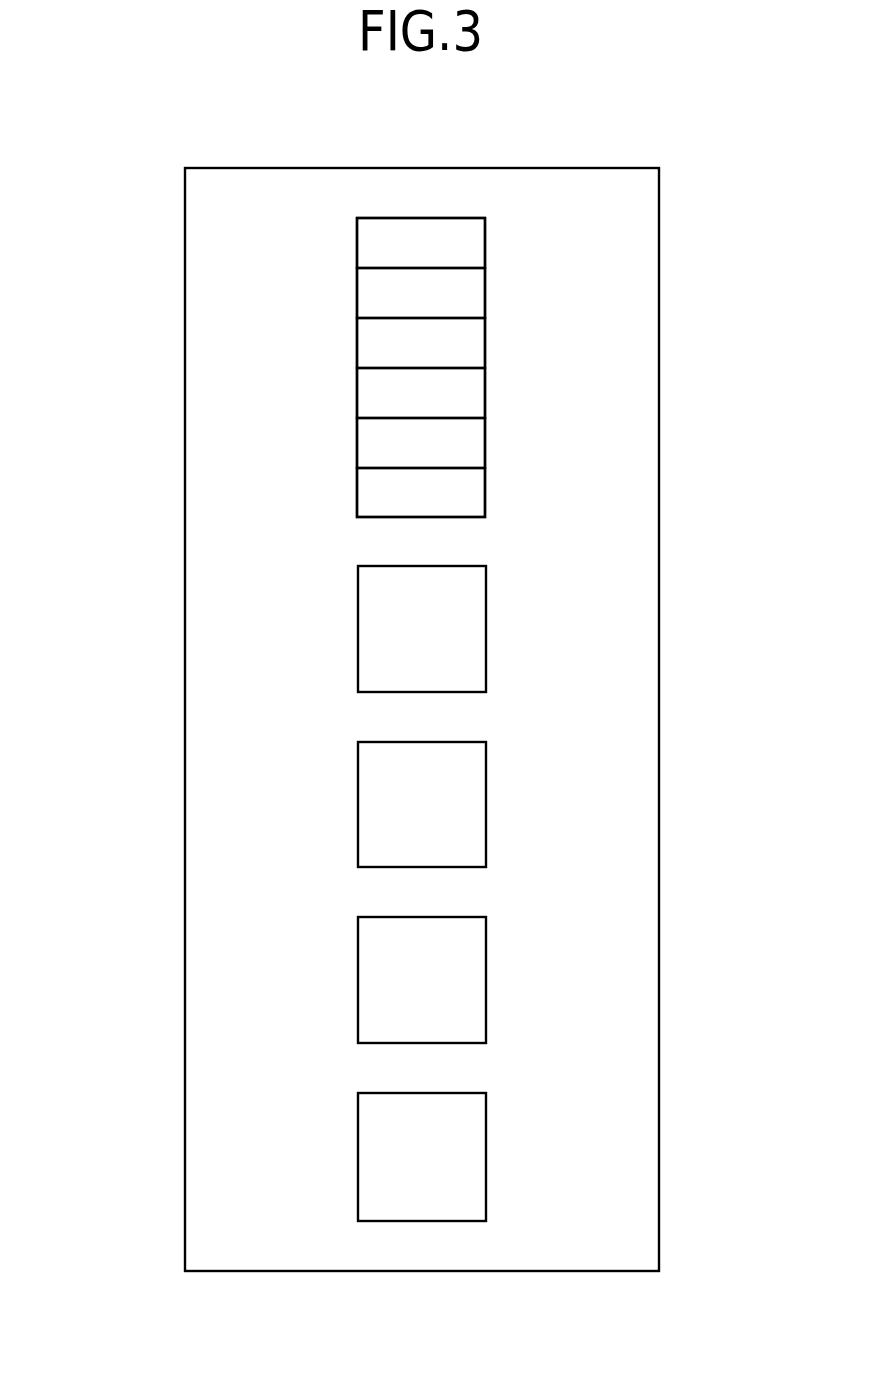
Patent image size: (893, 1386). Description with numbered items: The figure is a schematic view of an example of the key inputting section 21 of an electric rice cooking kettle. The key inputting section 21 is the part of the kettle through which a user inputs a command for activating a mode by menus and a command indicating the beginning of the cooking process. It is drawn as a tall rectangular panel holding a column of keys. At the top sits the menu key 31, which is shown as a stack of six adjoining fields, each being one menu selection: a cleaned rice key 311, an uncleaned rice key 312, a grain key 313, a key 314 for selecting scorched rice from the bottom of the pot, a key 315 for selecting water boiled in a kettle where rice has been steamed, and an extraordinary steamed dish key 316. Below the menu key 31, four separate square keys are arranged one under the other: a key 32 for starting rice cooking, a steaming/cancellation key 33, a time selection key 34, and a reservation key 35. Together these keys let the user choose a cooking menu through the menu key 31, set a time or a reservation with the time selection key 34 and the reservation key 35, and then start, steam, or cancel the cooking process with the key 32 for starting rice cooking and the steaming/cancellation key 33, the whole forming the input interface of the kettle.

The key inputting section 21 is at (150, 137).
The menu key 31 is at (248, 386).
The cleaned rice key 311 is at (467, 244).
The uncleaned rice key 312 is at (467, 294).
The grain key 313 is at (467, 343).
The key for selecting a scorched rice from the bottom of the pot 314 is at (467, 393).
The key for selecting water boiled in a kettle where rice has been steamed 315 is at (467, 443).
The extraordinary steamed dish key 316 is at (467, 492).
The key for starting rice cooking 32 is at (467, 630).
The steaming/cancellation key 33 is at (467, 805).
The time selection key 34 is at (467, 981).
The reservation key 35 is at (467, 1158).